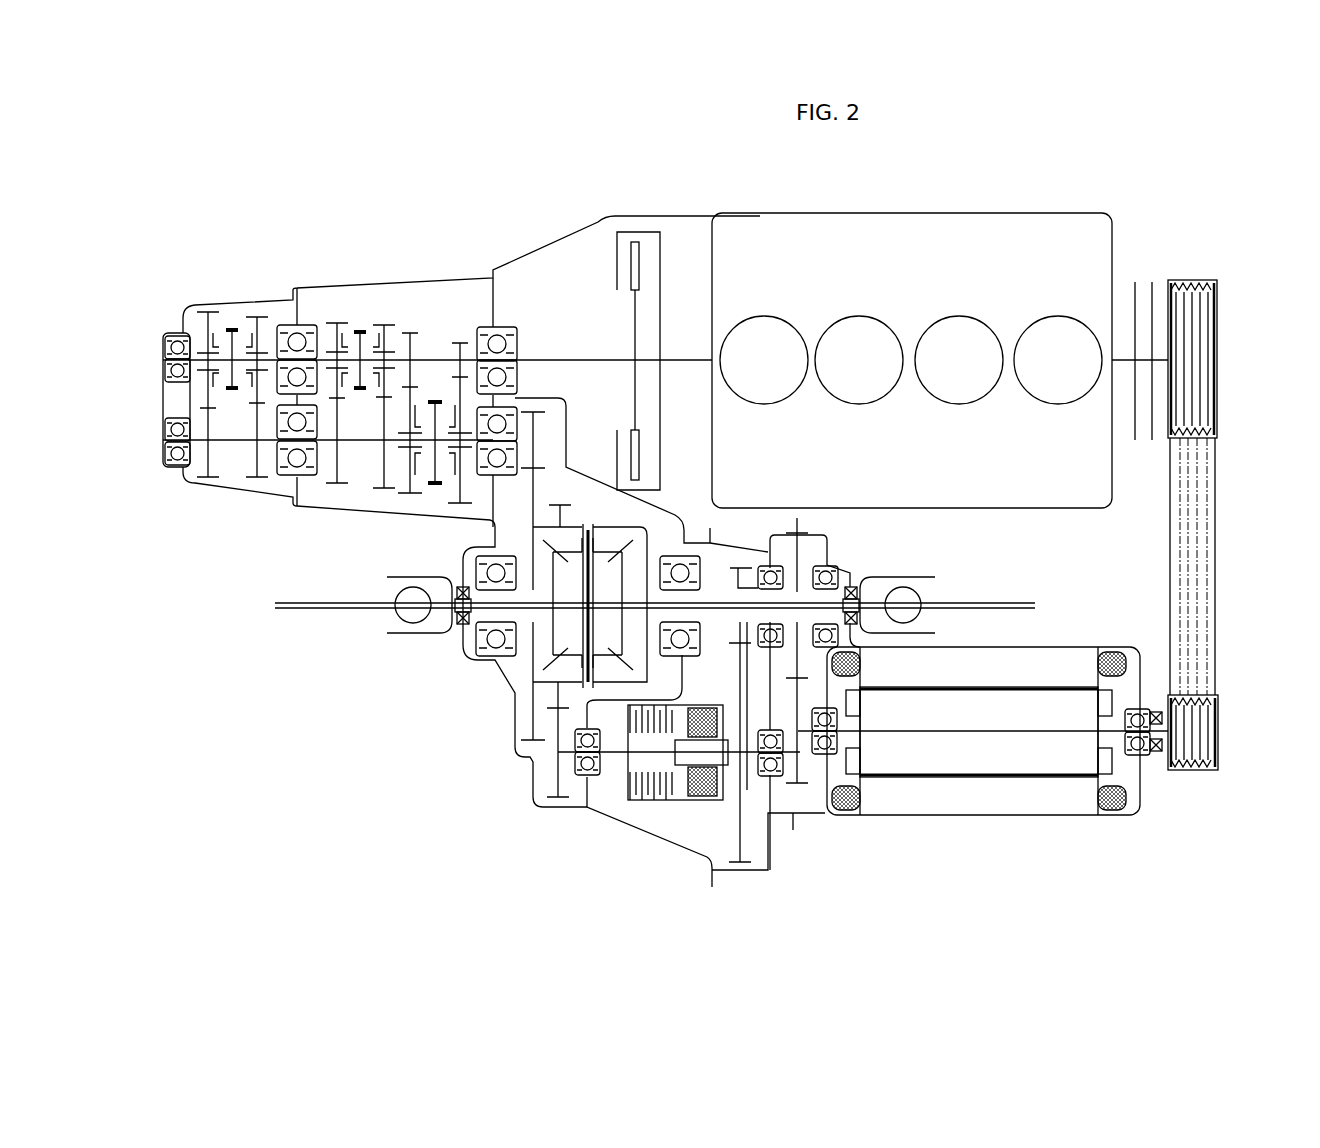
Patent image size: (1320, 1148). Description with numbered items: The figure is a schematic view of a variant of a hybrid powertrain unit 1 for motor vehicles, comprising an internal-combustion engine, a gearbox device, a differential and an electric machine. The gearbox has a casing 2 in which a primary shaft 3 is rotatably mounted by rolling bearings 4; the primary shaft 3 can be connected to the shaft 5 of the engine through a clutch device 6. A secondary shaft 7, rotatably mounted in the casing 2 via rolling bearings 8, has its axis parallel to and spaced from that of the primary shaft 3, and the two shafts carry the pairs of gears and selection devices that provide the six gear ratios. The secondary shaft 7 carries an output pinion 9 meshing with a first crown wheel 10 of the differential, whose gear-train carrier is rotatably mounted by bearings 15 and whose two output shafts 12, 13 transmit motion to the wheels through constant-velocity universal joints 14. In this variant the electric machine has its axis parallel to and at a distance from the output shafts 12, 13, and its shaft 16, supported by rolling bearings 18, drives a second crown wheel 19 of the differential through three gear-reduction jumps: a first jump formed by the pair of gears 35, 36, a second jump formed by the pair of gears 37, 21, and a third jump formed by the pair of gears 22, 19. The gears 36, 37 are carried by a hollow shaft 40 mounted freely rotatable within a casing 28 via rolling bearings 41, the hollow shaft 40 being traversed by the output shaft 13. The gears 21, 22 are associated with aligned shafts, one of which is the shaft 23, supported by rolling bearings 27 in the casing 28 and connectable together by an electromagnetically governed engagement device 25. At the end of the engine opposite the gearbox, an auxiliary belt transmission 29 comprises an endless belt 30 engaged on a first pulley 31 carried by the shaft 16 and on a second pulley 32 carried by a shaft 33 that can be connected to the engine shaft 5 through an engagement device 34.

The hybrid powertrain unit 1 is at (291, 178).
The casing 2 is at (462, 278).
The primary shaft 3 is at (552, 356).
The rolling bearings 4 is at (168, 332).
The shaft of the engine 5 is at (682, 356).
The clutch device 6 is at (662, 242).
The secondary shaft 7 is at (232, 448).
The rolling bearings 8 is at (172, 456).
The output pinion 9 is at (536, 426).
The first crown wheel 10 is at (538, 492).
The output shaft 12 is at (465, 626).
The output shaft 13 is at (868, 608).
The constant-velocity universal joints 14 is at (405, 612).
The bearings 15 is at (500, 568).
The shaft of the electric machine 16 is at (972, 738).
The rolling bearings 18 is at (840, 736).
The second crown wheel 19 is at (566, 508).
The gear 21 is at (738, 832).
The gear 22 is at (560, 788).
The shaft 23 is at (750, 760).
The engagement device 25 is at (660, 812).
The rolling bearings 27 is at (768, 742).
The casing 28 is at (630, 832).
The auxiliary belt transmission 29 is at (1237, 566).
The endless belt 30 is at (1205, 648).
The first pulley 31 is at (1205, 772).
The second pulley 32 is at (1206, 338).
The shaft 33 is at (1160, 356).
The engagement device 34 is at (1143, 270).
The gear 35 is at (802, 774).
The gear 36 is at (832, 552).
The gear 37 is at (731, 580).
The hollow shaft 40 is at (846, 640).
The rolling bearings 41 is at (774, 575).